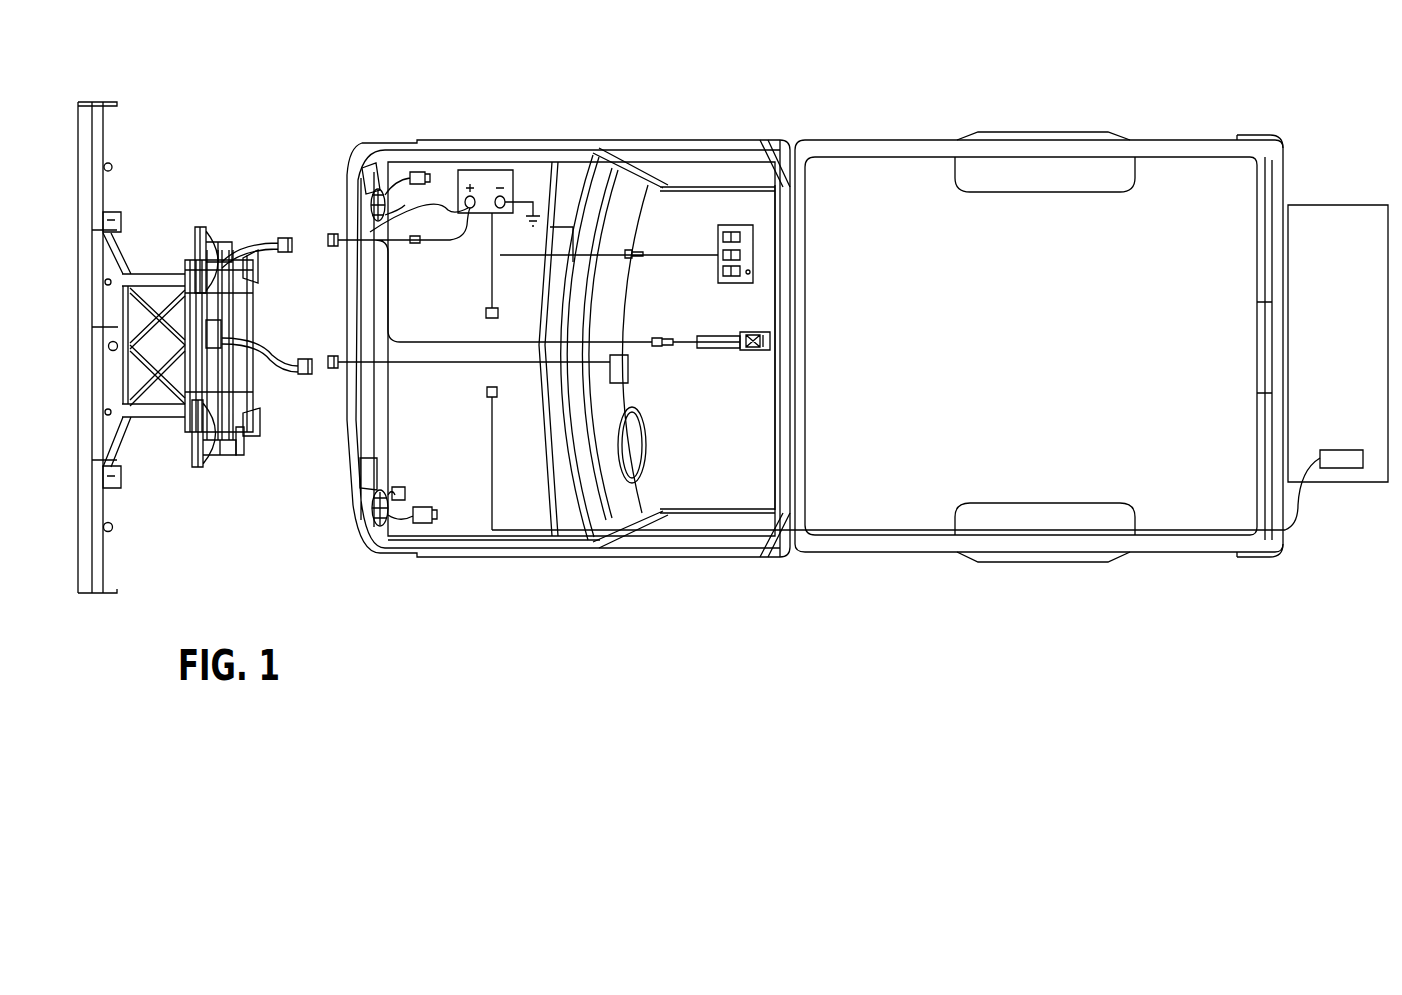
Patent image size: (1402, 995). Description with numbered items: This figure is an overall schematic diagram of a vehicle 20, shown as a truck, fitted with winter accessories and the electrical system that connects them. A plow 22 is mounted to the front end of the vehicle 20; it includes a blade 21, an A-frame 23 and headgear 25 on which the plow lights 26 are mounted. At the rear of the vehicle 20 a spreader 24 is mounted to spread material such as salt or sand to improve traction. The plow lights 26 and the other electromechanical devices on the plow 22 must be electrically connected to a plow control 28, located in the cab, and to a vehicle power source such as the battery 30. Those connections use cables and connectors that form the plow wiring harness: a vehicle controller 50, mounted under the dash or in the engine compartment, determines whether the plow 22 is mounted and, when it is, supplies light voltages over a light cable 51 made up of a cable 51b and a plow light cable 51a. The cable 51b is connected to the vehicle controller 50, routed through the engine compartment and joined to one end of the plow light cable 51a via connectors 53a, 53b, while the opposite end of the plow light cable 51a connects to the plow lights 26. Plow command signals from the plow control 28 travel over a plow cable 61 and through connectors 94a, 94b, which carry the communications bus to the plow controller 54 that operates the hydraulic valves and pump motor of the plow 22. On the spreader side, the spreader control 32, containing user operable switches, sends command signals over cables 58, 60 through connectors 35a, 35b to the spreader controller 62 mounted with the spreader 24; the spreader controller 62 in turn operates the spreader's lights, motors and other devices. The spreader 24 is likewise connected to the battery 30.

The vehicle 20 is at (997, 117).
The blade 21 is at (102, 140).
The plow 22 is at (75, 90).
The A-frame 23 is at (120, 428).
The spreader 24 is at (1330, 206).
The headgear 25 is at (244, 440).
The plow lights 26 is at (207, 228).
The plow control 28 is at (748, 332).
The battery 30 is at (487, 170).
The spreader control 32 is at (719, 245).
The connector 35a is at (488, 400).
The connector 35b is at (485, 316).
The vehicle controller 50 is at (630, 370).
The cable 51 is at (617, 342).
The plow light cable 51a is at (243, 433).
The light cable 51b is at (410, 365).
The connector 53a is at (304, 373).
The connector 53b is at (331, 356).
The plow controller 54 is at (232, 335).
The cable 58 is at (519, 256).
The cable 60 is at (872, 530).
The plow cable 61 is at (393, 283).
The spreader controller 62 is at (1346, 450).
The connector 94a is at (283, 240).
The connector 94b is at (331, 234).